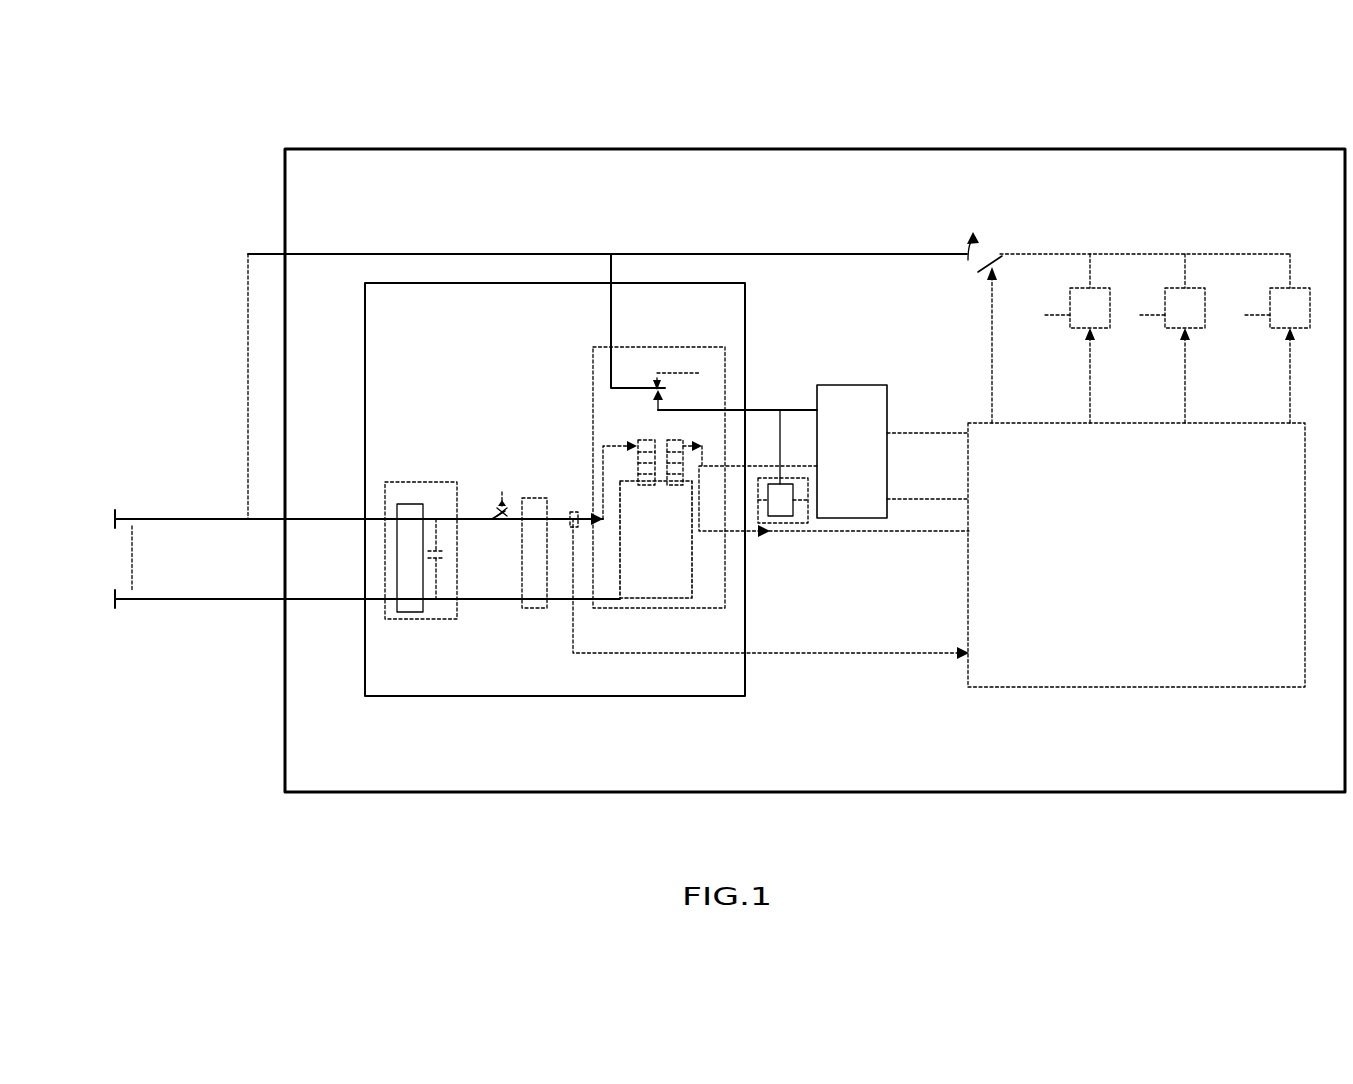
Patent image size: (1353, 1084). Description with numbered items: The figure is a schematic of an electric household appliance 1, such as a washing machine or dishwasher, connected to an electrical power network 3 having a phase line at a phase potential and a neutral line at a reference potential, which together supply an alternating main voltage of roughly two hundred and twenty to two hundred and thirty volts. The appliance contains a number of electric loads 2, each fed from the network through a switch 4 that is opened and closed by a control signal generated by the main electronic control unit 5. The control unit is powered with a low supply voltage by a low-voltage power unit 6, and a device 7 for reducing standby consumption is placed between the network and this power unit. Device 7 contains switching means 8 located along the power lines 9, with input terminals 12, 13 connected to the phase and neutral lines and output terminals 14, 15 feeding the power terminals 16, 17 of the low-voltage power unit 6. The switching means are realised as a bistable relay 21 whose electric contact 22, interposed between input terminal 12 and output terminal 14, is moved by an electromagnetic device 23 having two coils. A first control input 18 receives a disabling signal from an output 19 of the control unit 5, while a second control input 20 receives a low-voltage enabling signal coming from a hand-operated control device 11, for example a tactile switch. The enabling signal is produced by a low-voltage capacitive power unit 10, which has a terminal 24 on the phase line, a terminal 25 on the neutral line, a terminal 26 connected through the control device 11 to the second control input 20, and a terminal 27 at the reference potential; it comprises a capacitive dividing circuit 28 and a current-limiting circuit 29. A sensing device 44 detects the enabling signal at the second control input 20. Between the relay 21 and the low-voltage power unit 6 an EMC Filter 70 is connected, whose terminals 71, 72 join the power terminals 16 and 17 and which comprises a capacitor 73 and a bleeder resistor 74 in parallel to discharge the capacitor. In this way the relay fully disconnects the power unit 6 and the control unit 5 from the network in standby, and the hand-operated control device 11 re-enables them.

The electric household appliance 1 is at (972, 149).
The electric loads 2 is at (1170, 338).
The electrical power network 3 is at (100, 556).
The switch 4 is at (990, 248).
The electronic device (main electronic control unit) 5 is at (1136, 555).
The low-voltage power unit 6 is at (892, 451).
The device for reducing standby energy consumption 7 is at (401, 283).
The switching means 8 is at (594, 398).
The power lines 9 is at (613, 297).
The low-voltage capacitive power unit 10 is at (520, 625).
The hand-operated control device 11 is at (493, 484).
The input terminal 12 is at (608, 340).
The input terminal 13 is at (577, 603).
The output terminal 14 is at (736, 408).
The output terminal 15 is at (732, 466).
The power terminal 16 is at (808, 392).
The power terminal 17 is at (815, 395).
The first control input 18 is at (733, 532).
The output 19 is at (920, 533).
The second control input 20 is at (598, 512).
The bistable relay 21 is at (645, 338).
The electric contact 22 is at (675, 374).
The electromagnetic device 23 is at (657, 485).
The terminal 24 is at (375, 517).
The terminal 25 is at (373, 600).
The terminal 26 is at (470, 518).
The terminal 27 is at (488, 600).
The capacitive dividing circuit 28 is at (415, 613).
The current-limiting circuit 29 is at (540, 609).
The sensing device 44 is at (580, 512).
The EMC Filter 70 is at (805, 518).
The terminal 71 is at (780, 470).
The terminal 72 is at (795, 525).
The capacitor 73 is at (798, 500).
The bleeder resistor 74 is at (760, 503).